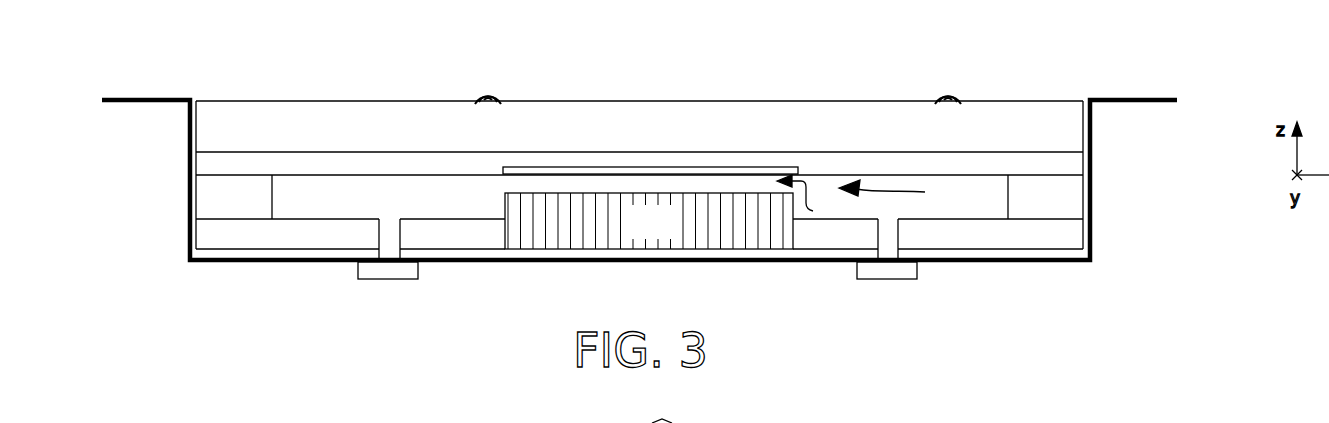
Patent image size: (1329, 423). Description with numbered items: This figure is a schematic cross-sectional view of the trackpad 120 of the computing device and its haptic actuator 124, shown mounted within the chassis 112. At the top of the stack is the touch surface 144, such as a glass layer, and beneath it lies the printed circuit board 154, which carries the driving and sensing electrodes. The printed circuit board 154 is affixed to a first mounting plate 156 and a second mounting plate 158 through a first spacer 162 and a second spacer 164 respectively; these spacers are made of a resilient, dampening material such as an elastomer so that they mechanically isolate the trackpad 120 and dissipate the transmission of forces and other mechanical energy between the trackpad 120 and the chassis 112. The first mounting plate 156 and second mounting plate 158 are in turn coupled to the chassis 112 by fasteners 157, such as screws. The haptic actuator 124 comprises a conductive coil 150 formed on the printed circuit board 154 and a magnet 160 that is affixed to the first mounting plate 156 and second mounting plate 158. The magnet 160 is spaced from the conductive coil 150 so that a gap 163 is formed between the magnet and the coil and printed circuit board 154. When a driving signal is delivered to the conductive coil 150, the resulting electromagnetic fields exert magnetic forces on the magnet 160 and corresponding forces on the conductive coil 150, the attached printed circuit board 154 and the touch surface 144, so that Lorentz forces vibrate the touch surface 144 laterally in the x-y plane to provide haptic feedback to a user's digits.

The chassis 112 is at (1143, 98).
The trackpad 120 is at (997, 56).
The haptic actuator 124 is at (902, 193).
The touch surface 144 is at (672, 101).
The conductive coil 150 is at (528, 174).
The printed circuit board 154 is at (405, 168).
The first mounting plate 156 is at (218, 233).
The fasteners 157 is at (384, 279).
The second mounting plate 158 is at (1070, 233).
The magnet 160 is at (673, 235).
The first spacer 162 is at (218, 196).
The gap 163 is at (814, 199).
The second spacer 164 is at (1070, 196).